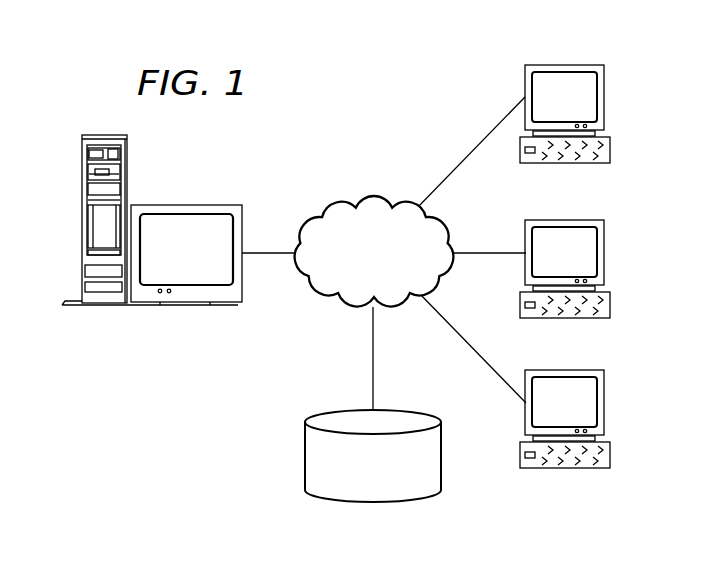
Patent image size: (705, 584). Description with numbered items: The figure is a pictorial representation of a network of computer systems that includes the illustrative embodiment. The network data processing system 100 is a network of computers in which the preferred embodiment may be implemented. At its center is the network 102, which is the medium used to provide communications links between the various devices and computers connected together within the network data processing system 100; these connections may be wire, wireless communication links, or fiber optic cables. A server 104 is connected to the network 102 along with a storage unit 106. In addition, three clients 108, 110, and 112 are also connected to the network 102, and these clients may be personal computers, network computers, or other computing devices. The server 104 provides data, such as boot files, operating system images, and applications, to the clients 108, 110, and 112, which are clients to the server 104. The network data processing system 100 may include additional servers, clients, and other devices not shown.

The network data processing system 100 is at (428, 76).
The network 102 is at (343, 203).
The server 104 is at (82, 222).
The storage unit 106 is at (355, 502).
The client 108 is at (605, 98).
The client 110 is at (605, 252).
The client 112 is at (605, 403).